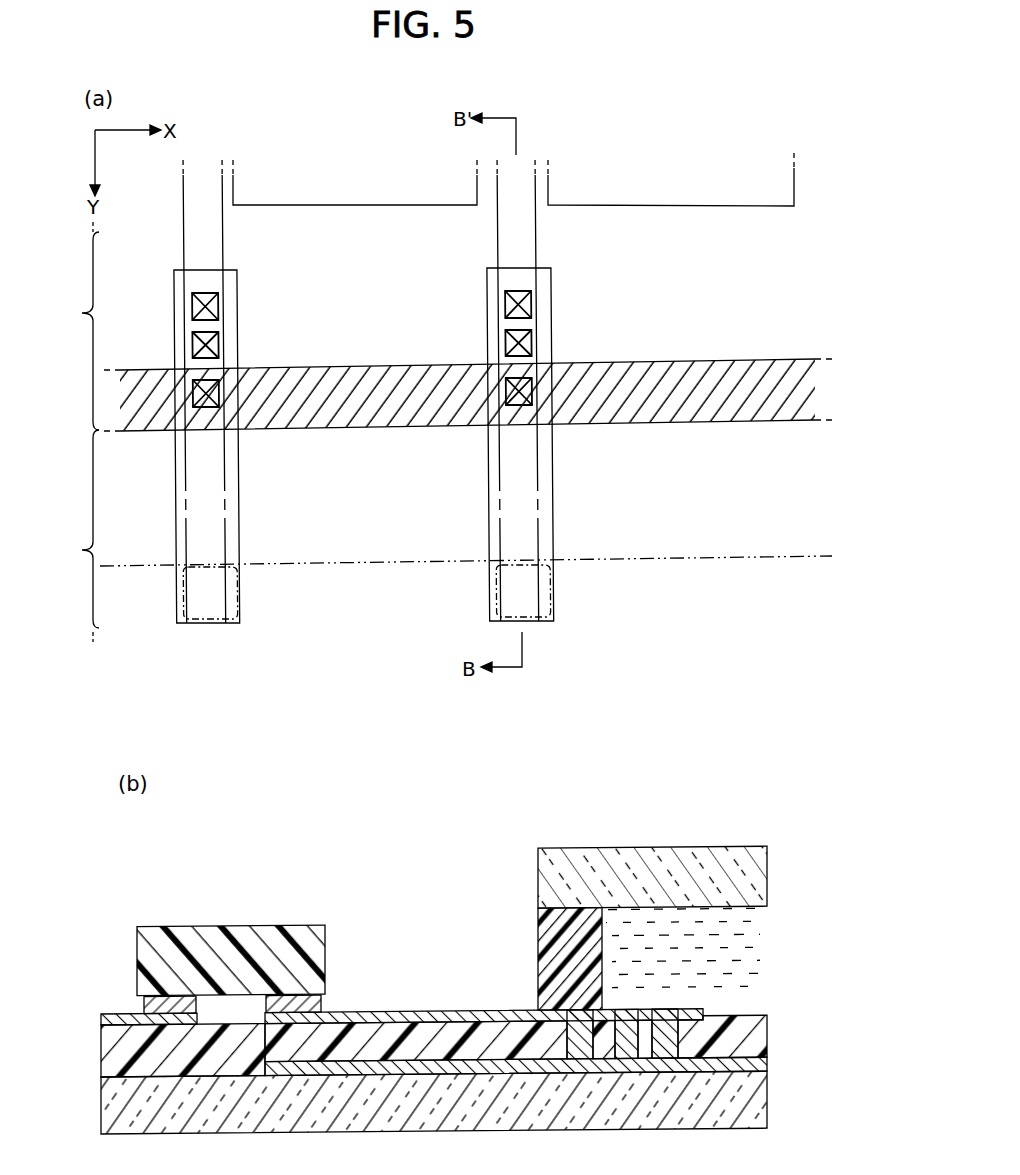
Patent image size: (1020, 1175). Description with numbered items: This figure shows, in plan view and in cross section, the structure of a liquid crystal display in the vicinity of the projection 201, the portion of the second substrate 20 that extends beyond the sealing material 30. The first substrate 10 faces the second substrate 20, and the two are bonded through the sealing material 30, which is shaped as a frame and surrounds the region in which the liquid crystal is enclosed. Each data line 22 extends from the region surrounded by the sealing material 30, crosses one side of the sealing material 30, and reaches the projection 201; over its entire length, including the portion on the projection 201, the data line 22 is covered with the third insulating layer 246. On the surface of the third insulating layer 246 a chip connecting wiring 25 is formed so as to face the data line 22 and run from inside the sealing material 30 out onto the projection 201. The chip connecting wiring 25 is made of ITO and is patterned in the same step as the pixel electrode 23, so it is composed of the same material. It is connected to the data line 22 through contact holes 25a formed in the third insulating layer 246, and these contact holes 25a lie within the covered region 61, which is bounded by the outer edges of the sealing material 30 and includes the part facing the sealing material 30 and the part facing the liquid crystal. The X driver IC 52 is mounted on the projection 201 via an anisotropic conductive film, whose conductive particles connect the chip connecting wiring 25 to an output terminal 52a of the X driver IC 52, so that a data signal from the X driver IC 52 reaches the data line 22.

The first substrate 10 is at (538, 892).
The second substrate 20 is at (768, 1098).
The data line 22 is at (224, 232).
The pixel electrode 23 is at (368, 206).
The chip connecting wiring 25 is at (237, 318).
The contact hole 25a is at (190, 394).
The sealing material 30 is at (724, 360).
The X driver IC 52 is at (690, 557).
The output terminal 52a is at (234, 593).
The covered region 61 is at (73, 331).
The projection 201 is at (69, 536).
The third insulating layer 246 is at (748, 1020).